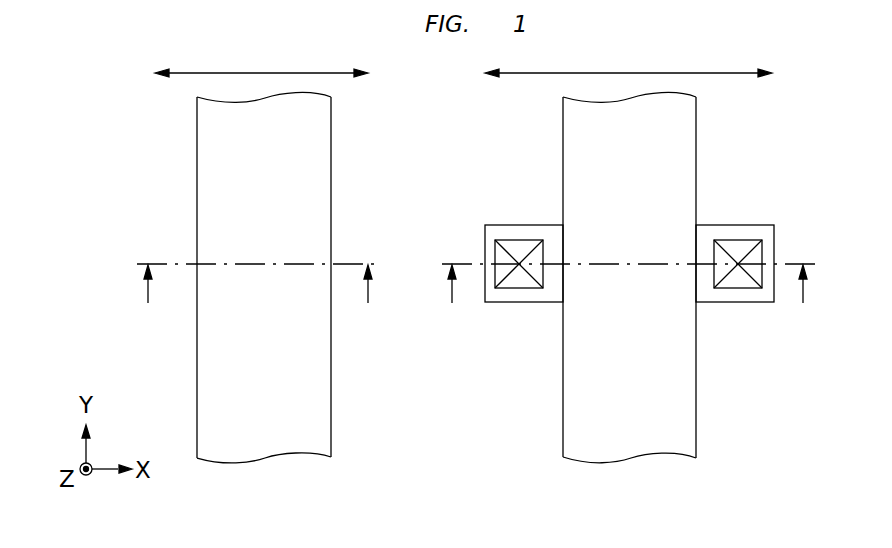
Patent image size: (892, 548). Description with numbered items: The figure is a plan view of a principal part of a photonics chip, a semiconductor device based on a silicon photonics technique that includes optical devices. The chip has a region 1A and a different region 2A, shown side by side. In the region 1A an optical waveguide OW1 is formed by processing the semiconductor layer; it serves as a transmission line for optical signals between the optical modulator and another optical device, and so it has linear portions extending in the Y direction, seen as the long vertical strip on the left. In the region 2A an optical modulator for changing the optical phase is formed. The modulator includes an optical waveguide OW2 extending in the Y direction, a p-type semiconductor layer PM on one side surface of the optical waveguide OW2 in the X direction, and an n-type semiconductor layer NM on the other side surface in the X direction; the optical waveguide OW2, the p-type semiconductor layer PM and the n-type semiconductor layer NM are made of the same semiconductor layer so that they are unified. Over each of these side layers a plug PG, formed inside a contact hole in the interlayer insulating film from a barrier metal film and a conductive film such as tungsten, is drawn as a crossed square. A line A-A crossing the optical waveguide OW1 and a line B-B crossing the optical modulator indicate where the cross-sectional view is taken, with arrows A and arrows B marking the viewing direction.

The region 1A is at (261, 61).
The region 2A is at (628, 61).
The optical waveguide OW1 is at (285, 423).
The optical waveguide OW2 is at (637, 423).
The plug PG is at (522, 248).
The n-type semiconductor layer NM is at (522, 295).
The p-type semiconductor layer PM is at (740, 295).
The line A- A is at (259, 297).
The line B- B is at (629, 297).